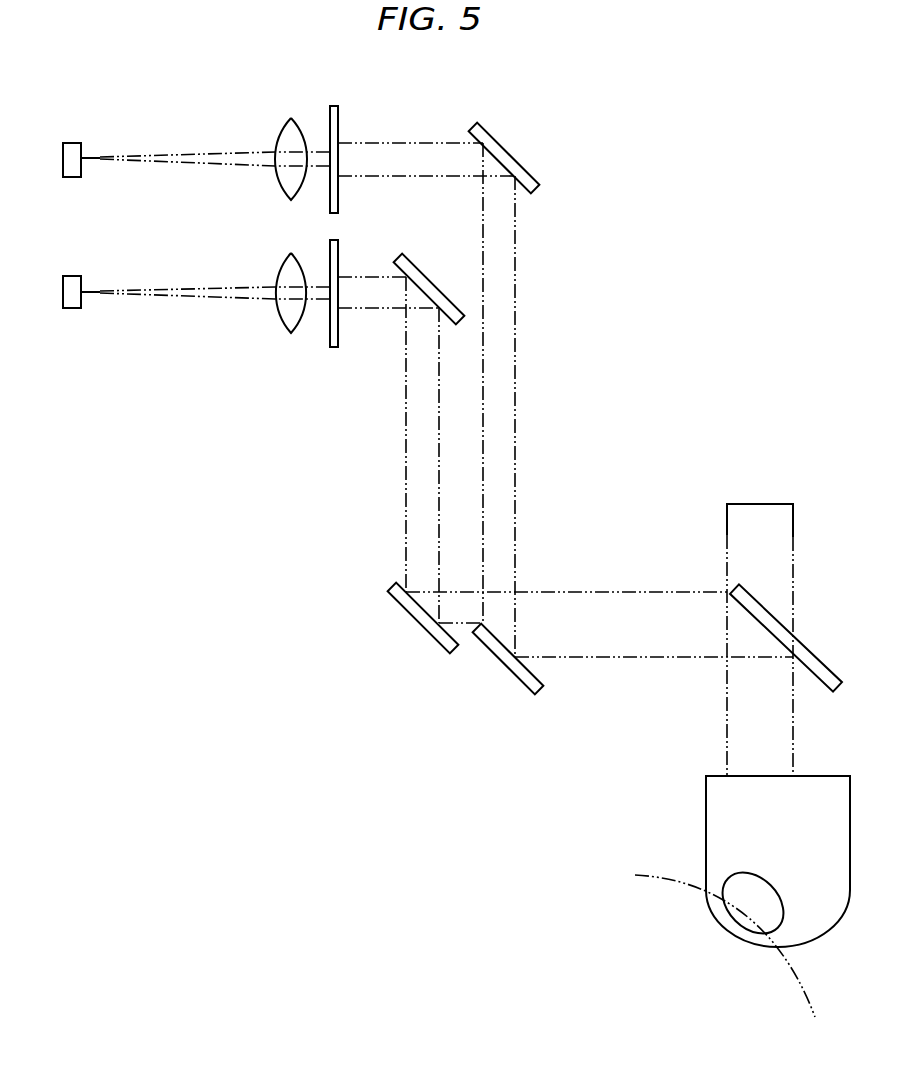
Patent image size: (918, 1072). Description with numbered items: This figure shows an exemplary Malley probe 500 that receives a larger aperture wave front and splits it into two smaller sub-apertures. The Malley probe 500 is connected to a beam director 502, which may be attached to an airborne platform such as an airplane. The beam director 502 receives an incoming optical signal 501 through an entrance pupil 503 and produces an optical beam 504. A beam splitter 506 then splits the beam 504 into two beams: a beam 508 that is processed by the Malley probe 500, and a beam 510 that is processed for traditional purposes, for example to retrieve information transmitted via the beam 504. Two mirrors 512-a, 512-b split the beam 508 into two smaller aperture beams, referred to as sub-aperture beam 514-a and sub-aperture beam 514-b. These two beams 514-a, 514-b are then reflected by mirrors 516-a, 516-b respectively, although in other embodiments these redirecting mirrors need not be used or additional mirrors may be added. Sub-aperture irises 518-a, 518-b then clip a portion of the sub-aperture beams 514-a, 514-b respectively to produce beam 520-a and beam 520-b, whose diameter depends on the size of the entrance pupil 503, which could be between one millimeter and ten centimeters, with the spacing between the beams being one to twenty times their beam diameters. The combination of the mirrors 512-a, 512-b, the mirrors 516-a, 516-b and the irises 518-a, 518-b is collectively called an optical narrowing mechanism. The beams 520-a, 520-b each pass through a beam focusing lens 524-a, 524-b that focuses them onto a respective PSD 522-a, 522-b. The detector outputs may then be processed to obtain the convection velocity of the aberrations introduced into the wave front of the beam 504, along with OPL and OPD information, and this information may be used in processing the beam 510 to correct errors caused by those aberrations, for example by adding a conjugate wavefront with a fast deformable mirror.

The Malley probe 500 is at (332, 837).
The incoming optical signal 501 is at (798, 968).
The beam director 502 is at (720, 832).
The entrance pupil 503 is at (730, 913).
The optical beam 504 is at (727, 715).
The beam splitter 506 is at (728, 597).
The beam 508 is at (630, 592).
The beam 510 is at (727, 532).
The mirror 512-a is at (503, 670).
The mirror 512-b is at (413, 623).
The sub-aperture beam 514-a is at (515, 427).
The sub-aperture beam 514-b is at (406, 488).
The mirror 516-a is at (517, 150).
The mirror 516-b is at (430, 275).
The sub-aperture iris 518-a is at (340, 120).
The sub-aperture iris 518-b is at (340, 340).
The beam 520-a is at (318, 157).
The beam 520-b is at (318, 297).
The PSD 522-a is at (72, 143).
The PSD 522-b is at (73, 276).
The beam focusing lens 524-a is at (290, 148).
The beam focusing lens 524-b is at (287, 298).